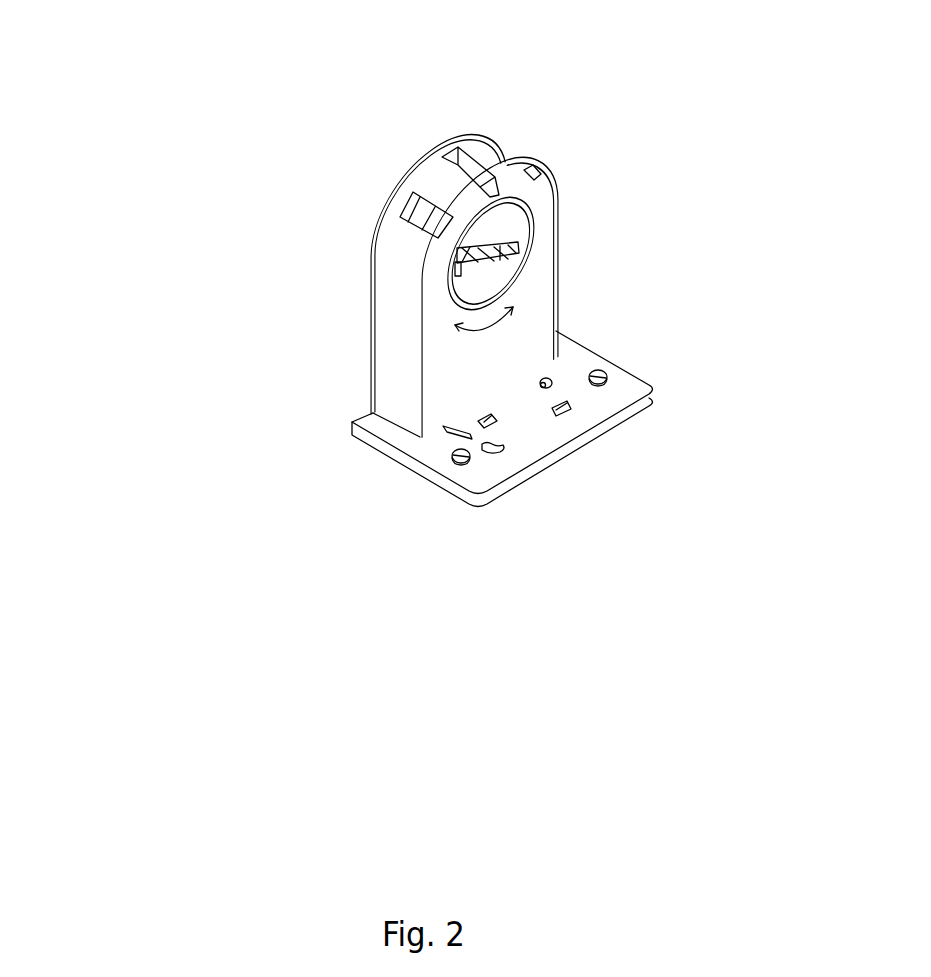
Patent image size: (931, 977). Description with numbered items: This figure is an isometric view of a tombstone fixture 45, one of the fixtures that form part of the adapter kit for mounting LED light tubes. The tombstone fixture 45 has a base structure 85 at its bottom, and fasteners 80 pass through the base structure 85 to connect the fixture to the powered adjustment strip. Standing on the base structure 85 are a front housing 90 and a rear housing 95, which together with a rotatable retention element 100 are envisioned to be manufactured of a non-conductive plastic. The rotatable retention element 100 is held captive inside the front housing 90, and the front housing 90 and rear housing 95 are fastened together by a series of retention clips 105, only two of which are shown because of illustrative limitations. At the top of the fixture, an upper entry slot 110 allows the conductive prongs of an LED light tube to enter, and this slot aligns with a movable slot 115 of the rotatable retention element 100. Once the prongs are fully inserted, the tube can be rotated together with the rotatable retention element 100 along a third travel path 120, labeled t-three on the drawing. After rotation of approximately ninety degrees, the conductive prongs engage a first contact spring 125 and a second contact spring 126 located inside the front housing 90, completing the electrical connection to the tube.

The tombstone fixture 45 is at (155, 568).
The fasteners 80 is at (603, 388).
The base structure 85 is at (630, 382).
The front housing 90 is at (525, 312).
The rear housing 95 is at (371, 277).
The rotatable retention element 100 is at (505, 224).
The retention clips 105 is at (538, 168).
The upper entry slot 110 is at (478, 166).
The movable slot 115 is at (459, 270).
The third travel path 120 is at (478, 333).
The first contact spring 125 is at (452, 265).
The second contact spring 126 is at (512, 245).